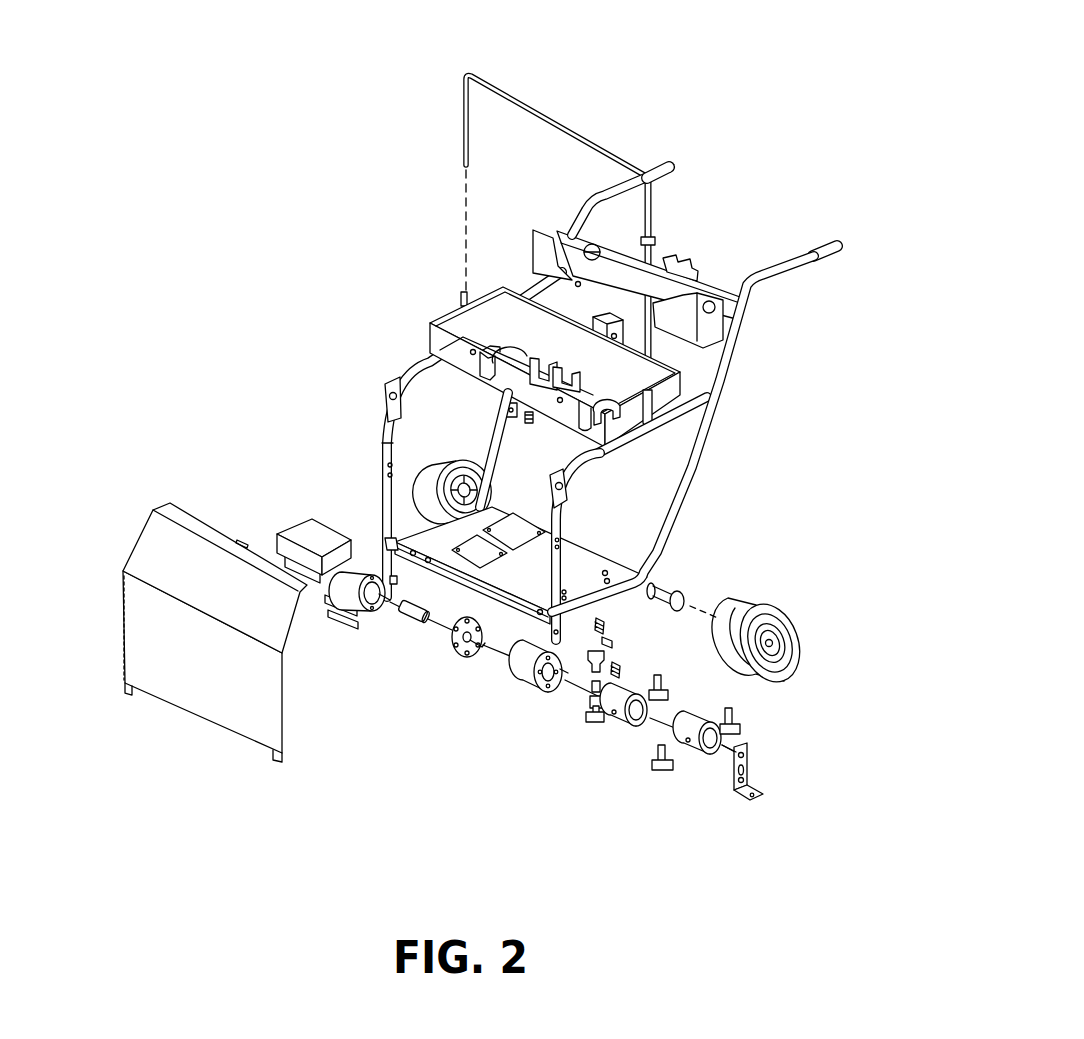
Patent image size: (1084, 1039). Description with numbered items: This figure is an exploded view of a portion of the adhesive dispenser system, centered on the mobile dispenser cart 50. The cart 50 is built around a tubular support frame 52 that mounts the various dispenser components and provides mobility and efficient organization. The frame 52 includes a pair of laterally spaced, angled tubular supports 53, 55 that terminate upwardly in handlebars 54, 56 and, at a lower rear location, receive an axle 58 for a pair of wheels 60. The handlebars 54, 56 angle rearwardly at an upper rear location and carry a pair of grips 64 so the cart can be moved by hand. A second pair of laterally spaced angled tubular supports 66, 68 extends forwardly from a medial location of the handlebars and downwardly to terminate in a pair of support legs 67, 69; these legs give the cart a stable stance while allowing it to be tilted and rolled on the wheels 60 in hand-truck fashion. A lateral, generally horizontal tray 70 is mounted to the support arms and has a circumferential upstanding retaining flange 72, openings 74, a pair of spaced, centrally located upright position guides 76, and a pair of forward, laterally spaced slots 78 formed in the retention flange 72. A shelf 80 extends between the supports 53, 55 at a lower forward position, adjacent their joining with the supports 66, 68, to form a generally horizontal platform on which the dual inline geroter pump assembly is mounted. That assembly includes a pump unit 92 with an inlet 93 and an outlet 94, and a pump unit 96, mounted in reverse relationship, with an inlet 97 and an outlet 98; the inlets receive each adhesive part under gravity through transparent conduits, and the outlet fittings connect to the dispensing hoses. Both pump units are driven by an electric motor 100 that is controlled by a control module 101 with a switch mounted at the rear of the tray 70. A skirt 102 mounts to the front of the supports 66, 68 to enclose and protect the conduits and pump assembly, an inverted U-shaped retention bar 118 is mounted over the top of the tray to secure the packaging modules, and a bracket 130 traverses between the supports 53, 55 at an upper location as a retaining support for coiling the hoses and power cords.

The mobile dispenser cart 50 is at (342, 249).
The tubular support frame 52 is at (693, 463).
The angled tubular support 53 is at (718, 382).
The handlebar 54 is at (803, 261).
The angled tubular support 55 is at (414, 371).
The handlebar 56 is at (615, 195).
The axle 58 is at (668, 590).
The wheel 60 is at (437, 480).
The grip 64 is at (657, 170).
The angled tubular support 66 is at (601, 457).
The support leg 67 is at (553, 640).
The angled tubular support 68 is at (388, 434).
The support leg 69 is at (392, 576).
The tray 70 is at (574, 327).
The retaining flange 72 is at (438, 340).
The opening 74 is at (513, 357).
The upright position guide 76 is at (574, 380).
The slot 78 is at (488, 360).
The shelf 80 is at (590, 566).
The pump unit 92 is at (692, 728).
The inlet 93 is at (741, 728).
The outlet 94 is at (658, 758).
The pump unit 96 is at (624, 706).
The inlet 97 is at (586, 718).
The outlet 98 is at (657, 690).
The electric motor 100 is at (337, 573).
The control module 101 is at (612, 317).
The skirt 102 is at (150, 550).
The retention bar 118 is at (493, 88).
The bracket 130 is at (727, 322).